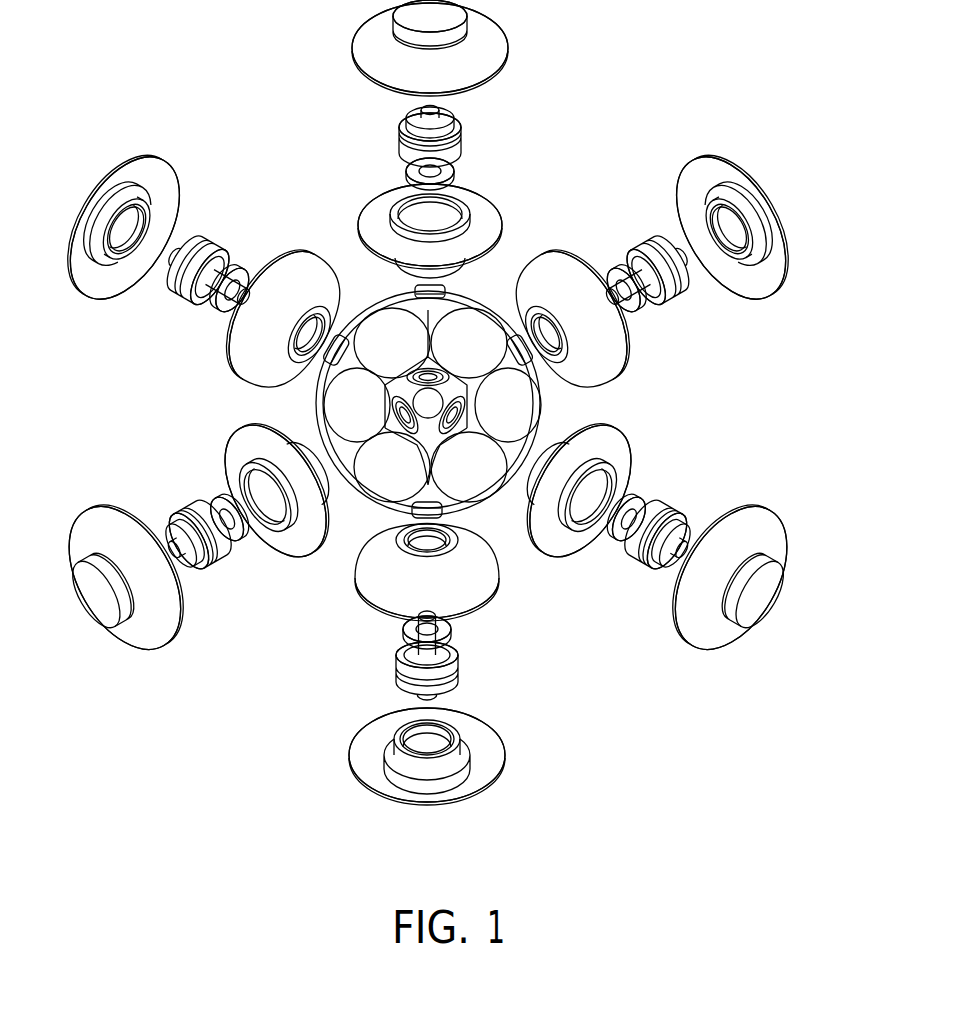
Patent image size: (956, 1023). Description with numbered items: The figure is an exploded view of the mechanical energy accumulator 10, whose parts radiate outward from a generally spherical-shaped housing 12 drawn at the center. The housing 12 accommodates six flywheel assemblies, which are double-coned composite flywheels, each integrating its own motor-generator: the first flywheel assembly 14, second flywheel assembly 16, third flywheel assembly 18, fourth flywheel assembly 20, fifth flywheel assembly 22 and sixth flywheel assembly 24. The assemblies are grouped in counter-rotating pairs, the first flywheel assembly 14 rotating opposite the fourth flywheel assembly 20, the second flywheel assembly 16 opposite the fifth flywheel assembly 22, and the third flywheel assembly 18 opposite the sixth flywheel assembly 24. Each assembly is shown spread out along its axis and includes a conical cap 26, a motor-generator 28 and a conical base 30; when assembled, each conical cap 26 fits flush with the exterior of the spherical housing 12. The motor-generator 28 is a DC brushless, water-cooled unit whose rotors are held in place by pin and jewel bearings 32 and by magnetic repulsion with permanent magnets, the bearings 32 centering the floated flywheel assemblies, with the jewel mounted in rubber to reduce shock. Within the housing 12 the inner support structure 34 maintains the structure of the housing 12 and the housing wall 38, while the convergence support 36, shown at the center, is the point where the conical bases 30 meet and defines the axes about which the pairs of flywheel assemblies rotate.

The mechanical energy accumulator 10 is at (656, 110).
The spherical-shaped housing 12 is at (478, 298).
The first flywheel assembly 14 is at (326, 130).
The second flywheel assembly 16 is at (672, 303).
The third flywheel assembly 18 is at (682, 492).
The fourth flywheel assembly 20 is at (468, 670).
The fifth flywheel assembly 22 is at (218, 566).
The sixth flywheel assembly 24 is at (178, 300).
The conical cap 26 is at (498, 35).
The motor-generator 28 is at (463, 140).
The conical base 30 is at (288, 252).
The pin and jewel bearings 32 is at (448, 630).
The inner support structure 34 is at (428, 333).
The convergence support 36 is at (443, 370).
The housing wall 38 is at (431, 436).